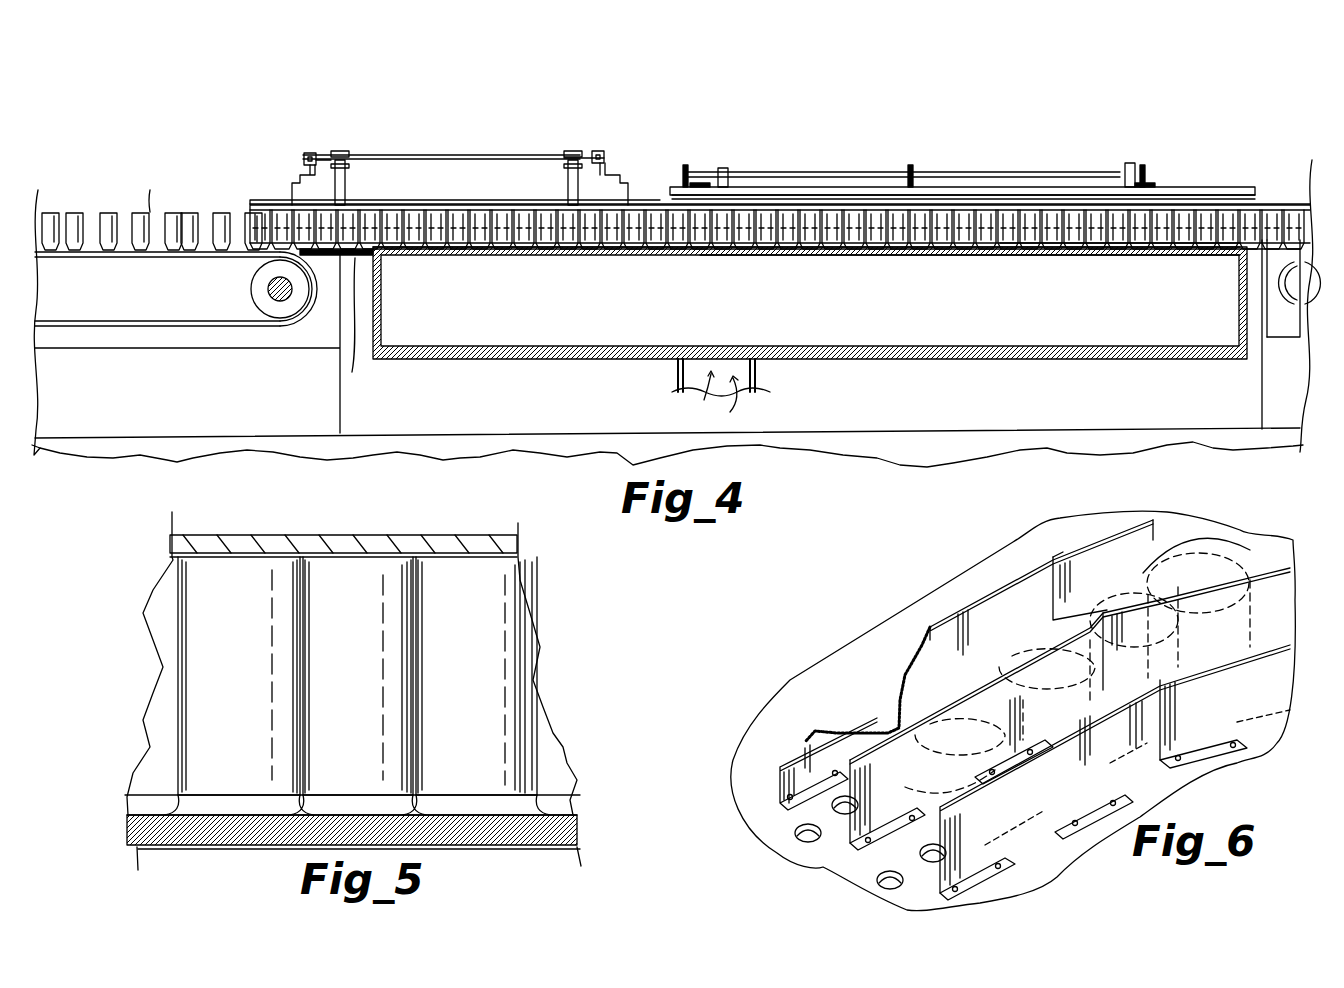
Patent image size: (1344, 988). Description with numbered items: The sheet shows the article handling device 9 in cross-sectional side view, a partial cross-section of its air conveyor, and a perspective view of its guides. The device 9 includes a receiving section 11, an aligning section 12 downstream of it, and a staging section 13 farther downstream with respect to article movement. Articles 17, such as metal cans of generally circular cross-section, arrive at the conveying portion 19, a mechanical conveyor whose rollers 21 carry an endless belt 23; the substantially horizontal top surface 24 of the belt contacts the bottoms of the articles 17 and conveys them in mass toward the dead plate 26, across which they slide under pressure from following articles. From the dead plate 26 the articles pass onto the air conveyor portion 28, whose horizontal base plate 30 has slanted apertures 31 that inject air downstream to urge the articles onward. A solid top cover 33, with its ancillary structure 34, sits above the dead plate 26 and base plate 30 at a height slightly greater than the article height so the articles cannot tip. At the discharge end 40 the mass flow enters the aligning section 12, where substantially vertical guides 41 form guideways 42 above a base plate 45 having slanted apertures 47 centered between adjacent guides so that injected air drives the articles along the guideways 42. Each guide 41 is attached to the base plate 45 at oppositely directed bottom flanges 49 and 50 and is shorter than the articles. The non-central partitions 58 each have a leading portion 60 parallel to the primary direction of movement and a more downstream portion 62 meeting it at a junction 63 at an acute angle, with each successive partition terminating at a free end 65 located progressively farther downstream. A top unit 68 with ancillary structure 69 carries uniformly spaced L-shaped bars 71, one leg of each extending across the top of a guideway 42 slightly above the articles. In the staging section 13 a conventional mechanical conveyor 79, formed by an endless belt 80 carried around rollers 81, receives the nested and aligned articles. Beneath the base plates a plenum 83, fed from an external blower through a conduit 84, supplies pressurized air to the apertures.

In FIG. 4, the device 9 is at (695, 120).
In FIG. 4, the receiving section 11 is at (262, 117).
In FIG. 4, the aligning section 12 is at (899, 128).
In FIG. 4, the staging section 13 is at (1218, 94).
In FIG. 4, the articles 17 is at (76, 212).
In FIG. 5, the articles 17 is at (248, 679).
In FIG. 6, the articles 17 is at (1232, 550).
In FIG. 4, the conveying portion 19 is at (100, 256).
In FIG. 4, the rollers 21 is at (250, 289).
In FIG. 4, the endless belt 23 is at (145, 330).
In FIG. 4, the top surface 24 is at (150, 212).
In FIG. 4, the dead plate 26 is at (371, 325).
In FIG. 4, the air conveyor portion 28 is at (418, 206).
In FIG. 5, the air conveyor portion 28 is at (354, 679).
In FIG. 4, the base plate 30 is at (478, 256).
In FIG. 5, the base plate 30 is at (292, 848).
In FIG. 4, the apertures 31 is at (562, 256).
In FIG. 5, the apertures 31 is at (188, 848).
In FIG. 4, the top cover 33 is at (500, 206).
In FIG. 5, the top cover 33 is at (338, 545).
In FIG. 4, the ancillary structure 34 is at (592, 154).
In FIG. 4, the discharge end 40 is at (698, 256).
In FIG. 6, the guides 41 is at (1120, 542).
In FIG. 6, the guideways 42 is at (1050, 610).
In FIG. 4, the base plate 45 is at (945, 256).
In FIG. 6, the base plate 45 is at (790, 812).
In FIG. 4, the apertures 47 is at (1024, 256).
In FIG. 6, the bottom edge or flange 49 is at (987, 870).
In FIG. 6, the bottom edge or flange 50 is at (1025, 837).
In FIG. 6, the non-central partitions 58 is at (945, 637).
In FIG. 6, the leading portion 60 is at (880, 702).
In FIG. 6, the downstream portion 62 is at (1200, 509).
In FIG. 6, the junction 63 is at (1050, 597).
In FIG. 6, the free end 65 is at (812, 856).
In FIG. 4, the top unit 68 is at (790, 186).
In FIG. 4, the ancillary structure 69 is at (1103, 186).
In FIG. 4, the L-shaped bars 71 is at (1013, 180).
In FIG. 4, the mechanical conveyor 79 is at (1260, 258).
In FIG. 4, the endless belt 80 is at (1292, 283).
In FIG. 4, the rollers 81 is at (1298, 335).
In FIG. 4, the plenum 83 is at (575, 332).
In FIG. 4, the conduit 84 is at (760, 373).